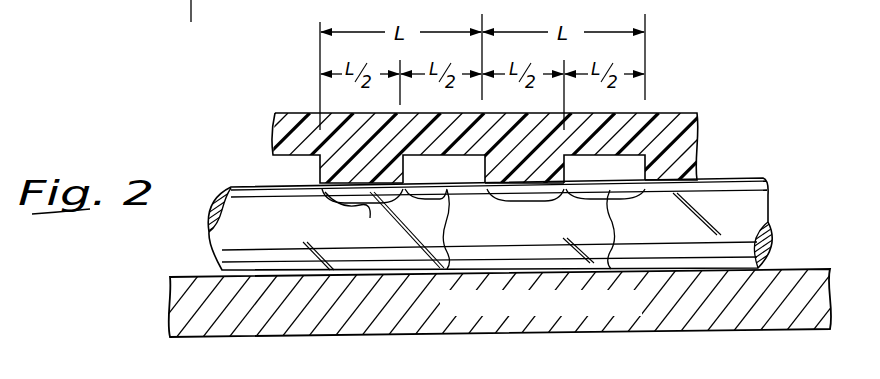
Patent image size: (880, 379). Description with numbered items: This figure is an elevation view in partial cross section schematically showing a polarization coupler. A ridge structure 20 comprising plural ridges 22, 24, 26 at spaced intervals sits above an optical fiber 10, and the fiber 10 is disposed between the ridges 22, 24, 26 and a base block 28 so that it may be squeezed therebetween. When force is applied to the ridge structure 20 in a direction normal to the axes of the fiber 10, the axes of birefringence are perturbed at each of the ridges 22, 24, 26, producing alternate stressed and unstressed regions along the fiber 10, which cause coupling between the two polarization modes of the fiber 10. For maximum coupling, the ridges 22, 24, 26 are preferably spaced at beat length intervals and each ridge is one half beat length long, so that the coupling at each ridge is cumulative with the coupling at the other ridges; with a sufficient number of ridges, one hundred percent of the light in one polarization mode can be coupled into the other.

The fiber 10 is at (766, 176).
The ridge structure 20 is at (700, 130).
The ridge 22 is at (324, 174).
The ridge 24 is at (485, 170).
The ridge 26 is at (647, 170).
The base block 28 is at (762, 312).